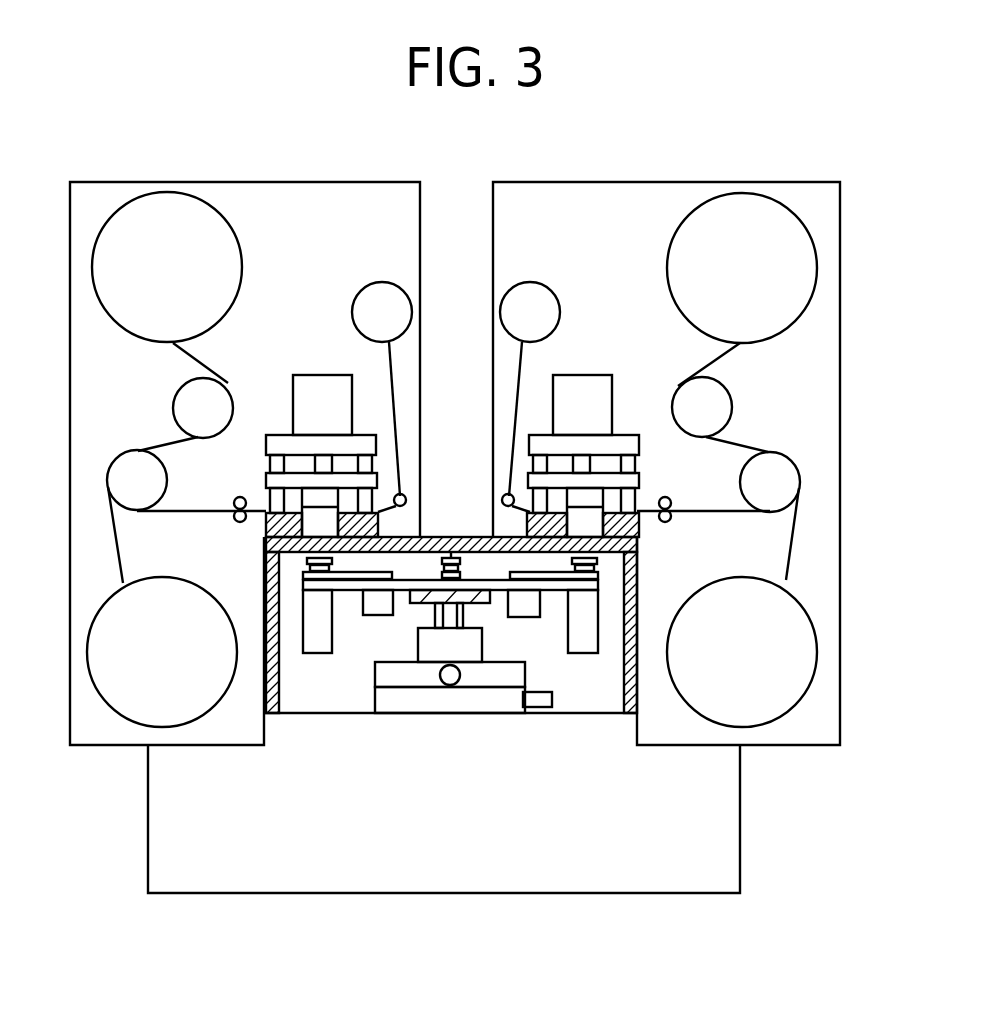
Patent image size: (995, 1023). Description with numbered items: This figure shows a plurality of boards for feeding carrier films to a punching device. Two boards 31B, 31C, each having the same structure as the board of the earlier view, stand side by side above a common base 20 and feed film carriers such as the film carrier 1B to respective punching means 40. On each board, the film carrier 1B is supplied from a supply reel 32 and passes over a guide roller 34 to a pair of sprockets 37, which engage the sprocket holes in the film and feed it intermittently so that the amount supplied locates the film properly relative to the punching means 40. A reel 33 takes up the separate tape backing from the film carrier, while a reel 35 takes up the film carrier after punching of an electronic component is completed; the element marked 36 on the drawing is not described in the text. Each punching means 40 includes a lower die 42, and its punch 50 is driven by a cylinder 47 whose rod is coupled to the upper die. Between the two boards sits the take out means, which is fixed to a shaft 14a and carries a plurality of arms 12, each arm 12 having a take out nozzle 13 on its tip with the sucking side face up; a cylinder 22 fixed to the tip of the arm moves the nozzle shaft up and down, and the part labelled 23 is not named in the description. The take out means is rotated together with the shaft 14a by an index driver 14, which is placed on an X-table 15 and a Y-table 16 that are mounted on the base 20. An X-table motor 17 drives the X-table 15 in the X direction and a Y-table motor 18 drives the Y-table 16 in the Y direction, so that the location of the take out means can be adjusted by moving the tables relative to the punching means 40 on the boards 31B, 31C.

The film carrier 1B is at (182, 349).
The arm 12 is at (350, 592).
The take out nozzle 13 is at (302, 565).
The index driver 14 is at (470, 652).
The shaft 14a is at (460, 607).
The X-table 15 is at (425, 703).
The Y-table 16 is at (393, 672).
The X-table motor 17 is at (537, 708).
The Y-table motor 18 is at (448, 688).
The base 20 is at (695, 894).
The cylinder 22 is at (316, 650).
The bracket 23 is at (383, 603).
The board 31B is at (295, 182).
The board 31C is at (672, 182).
The supply reel 32 is at (143, 215).
The reel 33 is at (142, 708).
The guide roller 34 is at (178, 411).
The reel 35 is at (383, 291).
The tape path 36 is at (118, 543).
The sprocket 37 is at (238, 497).
The punching means 40 is at (286, 409).
The lower die 42 is at (425, 537).
The cylinder 47 is at (320, 375).
The punch 50 is at (328, 496).